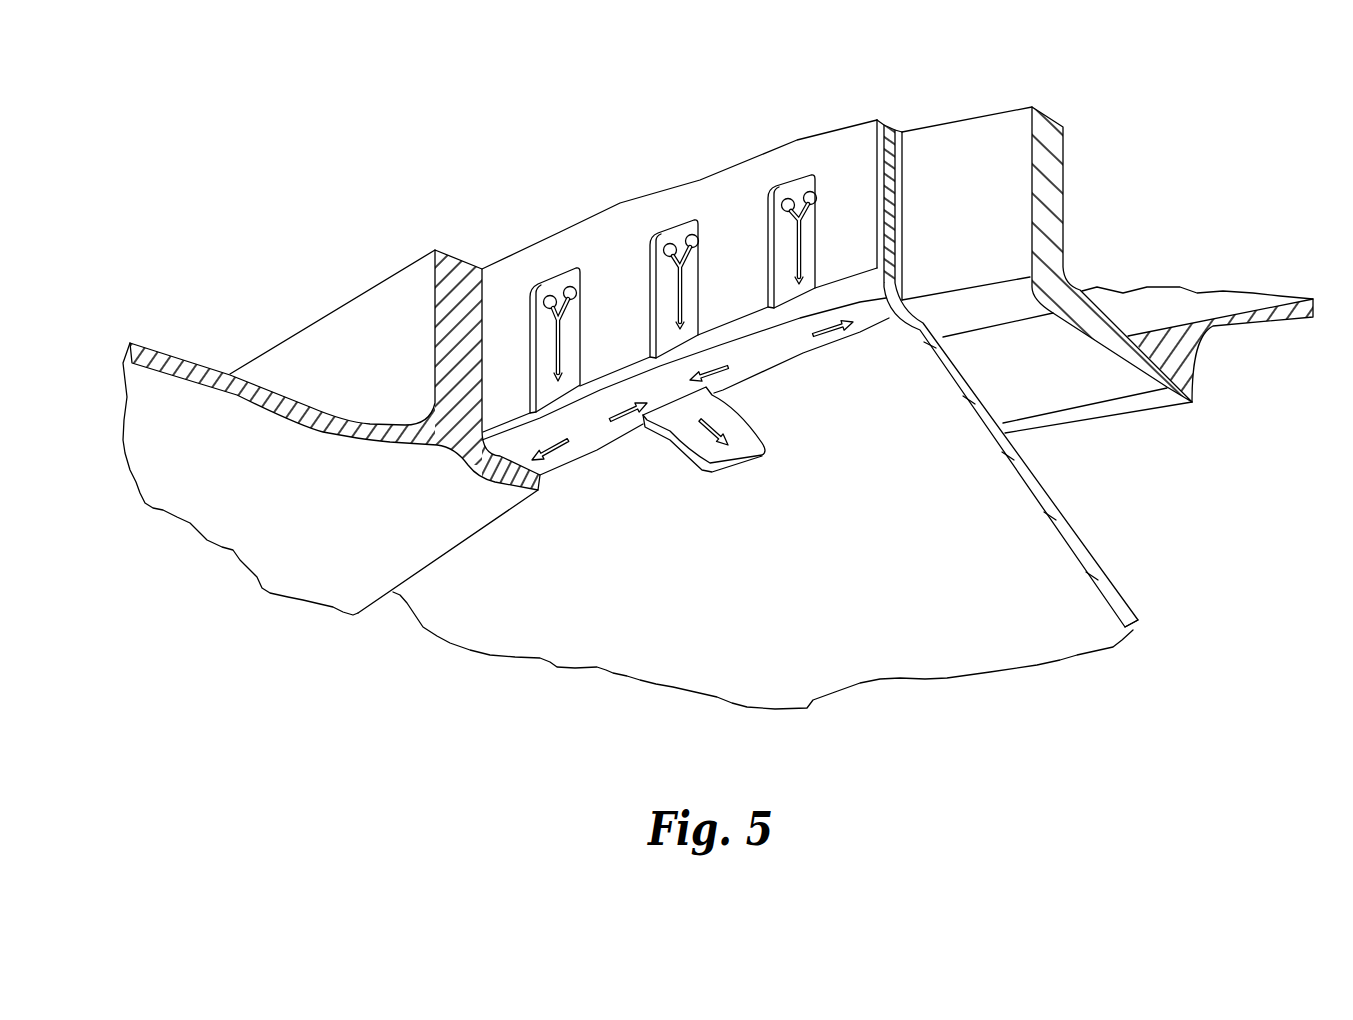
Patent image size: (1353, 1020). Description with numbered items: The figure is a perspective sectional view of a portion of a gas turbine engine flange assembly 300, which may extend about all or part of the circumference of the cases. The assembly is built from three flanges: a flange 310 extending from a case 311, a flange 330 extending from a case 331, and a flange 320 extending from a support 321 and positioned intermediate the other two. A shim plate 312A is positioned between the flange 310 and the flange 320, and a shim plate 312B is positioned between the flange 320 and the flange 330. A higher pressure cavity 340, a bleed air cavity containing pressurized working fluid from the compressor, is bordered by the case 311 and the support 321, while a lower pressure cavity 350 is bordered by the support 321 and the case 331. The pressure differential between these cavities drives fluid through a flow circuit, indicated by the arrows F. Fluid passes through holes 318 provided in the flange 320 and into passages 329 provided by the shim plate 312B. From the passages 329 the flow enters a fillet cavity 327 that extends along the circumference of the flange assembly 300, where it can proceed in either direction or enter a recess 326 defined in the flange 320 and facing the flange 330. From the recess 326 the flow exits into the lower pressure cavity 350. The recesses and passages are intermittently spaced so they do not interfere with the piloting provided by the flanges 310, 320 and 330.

The flange assembly 300 is at (401, 161).
The flange 310 is at (991, 134).
The case 311 is at (1290, 324).
The shim plate 312A is at (900, 183).
The shim plate 312B is at (808, 150).
The hole 318 is at (814, 190).
The flange 320 is at (1001, 339).
The support 321 is at (1106, 575).
The recess 326 is at (747, 440).
The fillet cavity 327 is at (587, 457).
The passage 329 is at (702, 280).
The flange 330 is at (466, 262).
The case 331 is at (182, 356).
The higher pressure cavity 340 is at (1067, 375).
The lower pressure cavity 350 is at (768, 584).